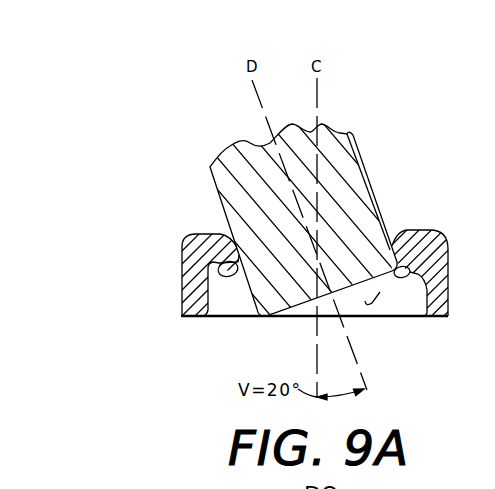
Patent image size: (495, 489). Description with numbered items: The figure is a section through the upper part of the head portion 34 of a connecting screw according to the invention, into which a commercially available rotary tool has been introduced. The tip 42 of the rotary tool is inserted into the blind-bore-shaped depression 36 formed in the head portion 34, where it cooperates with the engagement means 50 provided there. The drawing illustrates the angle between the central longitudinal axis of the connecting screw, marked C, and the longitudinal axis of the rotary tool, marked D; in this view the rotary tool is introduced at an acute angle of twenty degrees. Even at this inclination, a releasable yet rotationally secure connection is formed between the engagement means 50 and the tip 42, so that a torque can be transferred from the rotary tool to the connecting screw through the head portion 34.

The head portion 34 is at (192, 230).
The blind-bore-shaped depression 36 is at (378, 305).
The tip 42 is at (354, 133).
The engagement means 50 is at (413, 231).